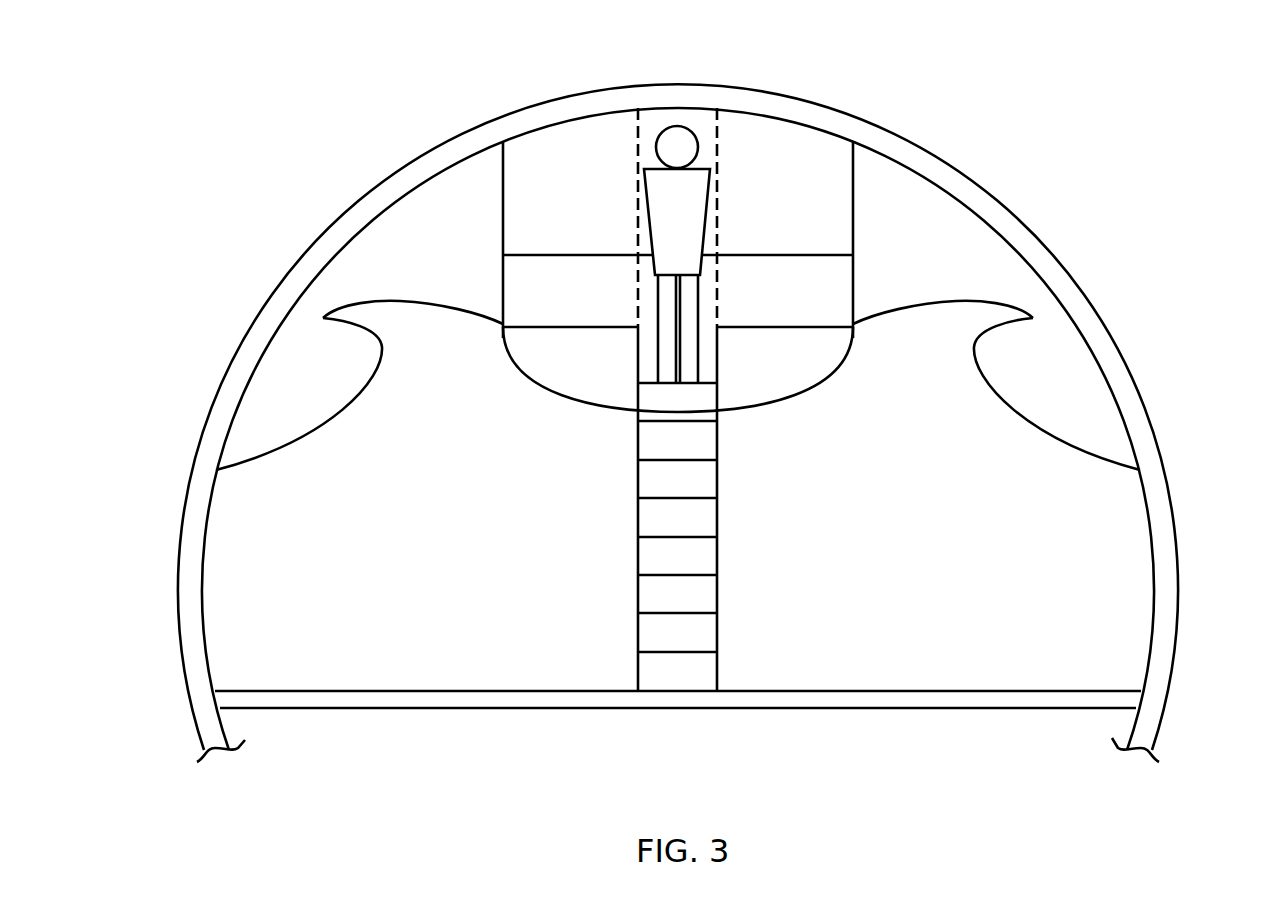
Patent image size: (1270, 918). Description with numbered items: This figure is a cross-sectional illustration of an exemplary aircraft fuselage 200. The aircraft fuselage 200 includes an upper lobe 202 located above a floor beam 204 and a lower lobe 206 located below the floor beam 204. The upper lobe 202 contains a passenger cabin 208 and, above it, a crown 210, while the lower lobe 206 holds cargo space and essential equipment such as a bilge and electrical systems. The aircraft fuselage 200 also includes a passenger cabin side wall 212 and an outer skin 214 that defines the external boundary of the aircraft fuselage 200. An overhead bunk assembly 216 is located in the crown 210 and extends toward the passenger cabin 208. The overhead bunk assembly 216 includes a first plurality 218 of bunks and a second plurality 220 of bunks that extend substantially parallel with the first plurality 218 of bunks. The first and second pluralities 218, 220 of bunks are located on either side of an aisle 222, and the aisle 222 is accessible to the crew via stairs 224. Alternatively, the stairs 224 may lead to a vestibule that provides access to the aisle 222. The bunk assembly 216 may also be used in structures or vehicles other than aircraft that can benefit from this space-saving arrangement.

The aircraft fuselage 200 is at (1057, 110).
The upper lobe 202 is at (1134, 295).
The floor beam 204 is at (996, 697).
The lower lobe 206 is at (698, 750).
The passenger cabin 208 is at (875, 528).
The crown 210 is at (938, 241).
The passenger cabin side wall 212 is at (1146, 522).
The outer skin 214 is at (1172, 492).
The overhead bunk assembly 216 is at (534, 410).
The first plurality of bunks 218 is at (486, 275).
The second plurality of bunks 220 is at (878, 275).
The aisle 222 is at (712, 370).
The stairs 224 is at (719, 584).